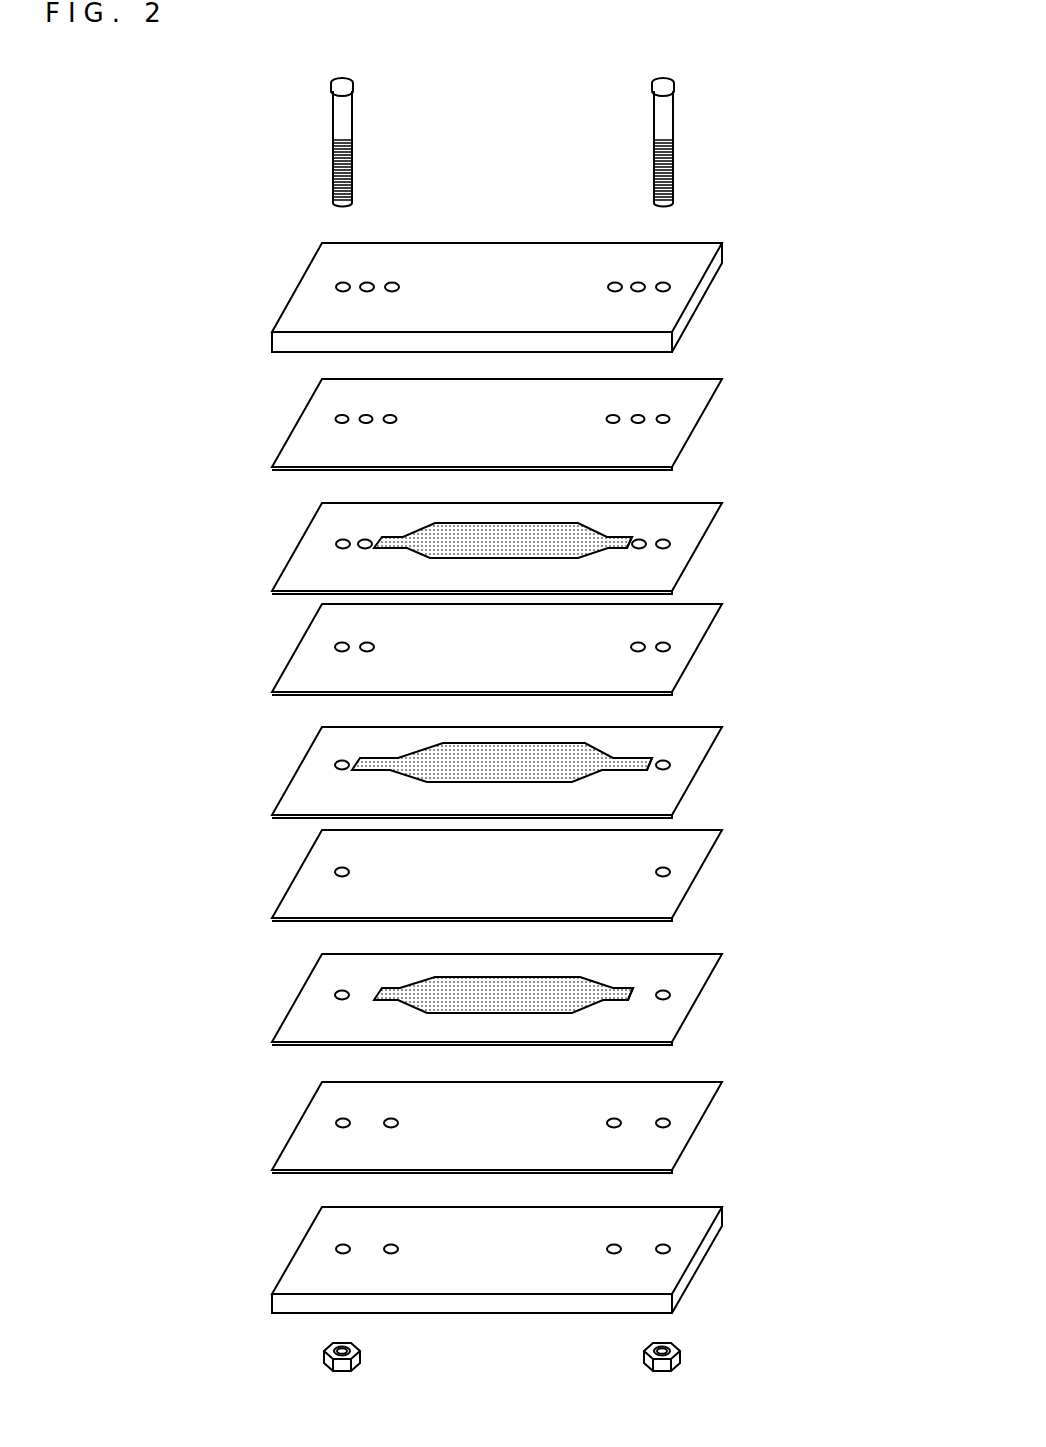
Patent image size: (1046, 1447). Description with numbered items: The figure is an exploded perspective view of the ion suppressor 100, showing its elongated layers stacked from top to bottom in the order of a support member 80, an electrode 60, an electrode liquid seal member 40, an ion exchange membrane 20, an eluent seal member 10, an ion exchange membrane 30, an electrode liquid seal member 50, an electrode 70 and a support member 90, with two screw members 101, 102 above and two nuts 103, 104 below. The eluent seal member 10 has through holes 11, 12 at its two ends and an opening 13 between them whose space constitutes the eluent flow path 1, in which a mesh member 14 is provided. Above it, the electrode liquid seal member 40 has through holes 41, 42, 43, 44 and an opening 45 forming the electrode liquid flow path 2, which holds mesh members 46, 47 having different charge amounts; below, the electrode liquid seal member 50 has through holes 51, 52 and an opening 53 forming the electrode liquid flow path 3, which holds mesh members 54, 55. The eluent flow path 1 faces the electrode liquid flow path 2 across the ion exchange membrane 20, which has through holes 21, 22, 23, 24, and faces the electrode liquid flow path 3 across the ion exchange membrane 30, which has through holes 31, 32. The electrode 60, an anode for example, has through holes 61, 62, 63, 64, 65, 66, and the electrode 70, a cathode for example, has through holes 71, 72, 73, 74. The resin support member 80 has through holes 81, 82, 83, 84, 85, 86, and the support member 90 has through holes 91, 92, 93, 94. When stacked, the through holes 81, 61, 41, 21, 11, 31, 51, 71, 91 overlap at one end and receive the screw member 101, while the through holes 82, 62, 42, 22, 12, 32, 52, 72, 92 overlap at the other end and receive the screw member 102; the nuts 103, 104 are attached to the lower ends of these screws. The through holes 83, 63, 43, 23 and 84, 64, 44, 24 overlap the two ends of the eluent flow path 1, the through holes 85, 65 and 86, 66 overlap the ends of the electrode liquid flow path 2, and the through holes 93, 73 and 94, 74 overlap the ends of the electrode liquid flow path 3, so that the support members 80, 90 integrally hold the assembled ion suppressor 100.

The ion suppressor 100 is at (833, 125).
The screw member 101 is at (333, 130).
The screw member 102 is at (673, 130).
The nut 103 is at (328, 1352).
The nut 104 is at (678, 1352).
The support member 80 is at (297, 288).
The through hole 81 is at (343, 283).
The through hole 82 is at (663, 283).
The through hole 83 is at (367, 283).
The through hole 84 is at (638, 283).
The through hole 85 is at (398, 285).
The through hole 86 is at (609, 285).
The electrode 60 is at (297, 423).
The through hole 61 is at (342, 415).
The through hole 62 is at (663, 415).
The through hole 63 is at (366, 415).
The through hole 64 is at (638, 415).
The through hole 65 is at (396, 418).
The through hole 66 is at (607, 418).
The electrode liquid seal member 40 is at (297, 547).
The through hole 41 is at (343, 540).
The through hole 42 is at (665, 539).
The through hole 43 is at (365, 549).
The through hole 44 is at (641, 549).
The opening 45 is at (631, 541).
The mesh member 46 is at (503, 514).
The mesh member 47 is at (505, 540).
The electrode liquid flow path 2 is at (547, 549).
The ion exchange membrane 20 is at (297, 648).
The through hole 21 is at (342, 643).
The through hole 22 is at (663, 643).
The through hole 23 is at (367, 643).
The through hole 24 is at (638, 643).
The eluent seal member 10 is at (297, 771).
The through hole 11 is at (342, 761).
The through hole 12 is at (665, 760).
The opening 13 is at (651, 760).
The mesh member 14 is at (505, 765).
The eluent flow path 1 is at (547, 771).
The ion exchange membrane 30 is at (297, 874).
The through hole 31 is at (342, 868).
The through hole 32 is at (663, 868).
The electrode liquid seal member 50 is at (297, 998).
The through hole 51 is at (342, 991).
The through hole 52 is at (665, 990).
The opening 53 is at (630, 989).
The mesh member 54 is at (503, 967).
The mesh member 55 is at (505, 990).
The electrode liquid flow path 3 is at (547, 1001).
The electrode 70 is at (297, 1126).
The through hole 71 is at (343, 1119).
The through hole 72 is at (663, 1119).
The through hole 73 is at (391, 1119).
The through hole 74 is at (614, 1119).
The support member 90 is at (297, 1251).
The through hole 91 is at (343, 1245).
The through hole 92 is at (663, 1245).
The through hole 93 is at (391, 1245).
The through hole 94 is at (614, 1245).